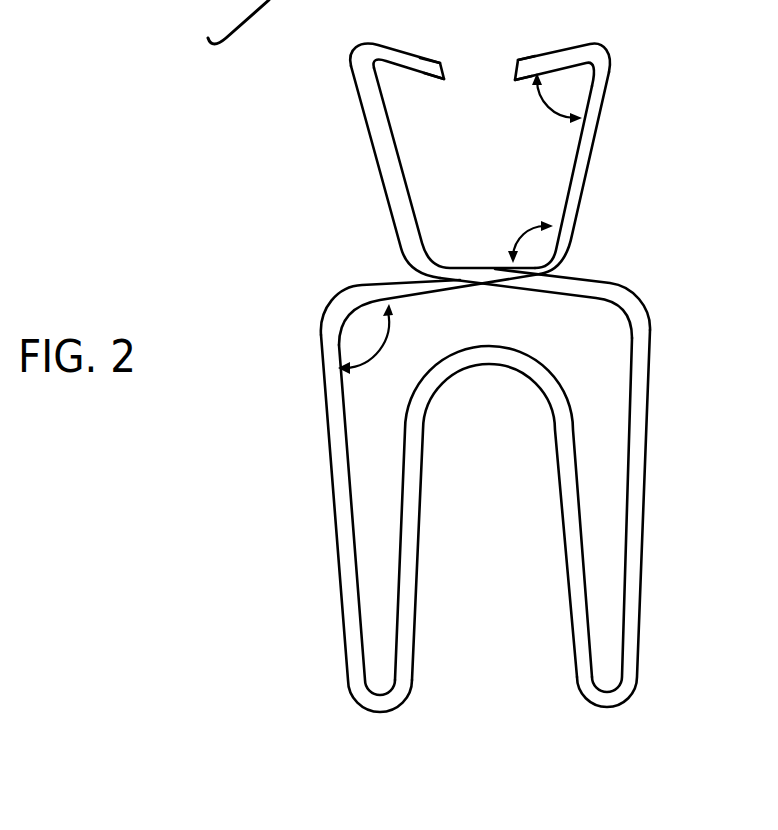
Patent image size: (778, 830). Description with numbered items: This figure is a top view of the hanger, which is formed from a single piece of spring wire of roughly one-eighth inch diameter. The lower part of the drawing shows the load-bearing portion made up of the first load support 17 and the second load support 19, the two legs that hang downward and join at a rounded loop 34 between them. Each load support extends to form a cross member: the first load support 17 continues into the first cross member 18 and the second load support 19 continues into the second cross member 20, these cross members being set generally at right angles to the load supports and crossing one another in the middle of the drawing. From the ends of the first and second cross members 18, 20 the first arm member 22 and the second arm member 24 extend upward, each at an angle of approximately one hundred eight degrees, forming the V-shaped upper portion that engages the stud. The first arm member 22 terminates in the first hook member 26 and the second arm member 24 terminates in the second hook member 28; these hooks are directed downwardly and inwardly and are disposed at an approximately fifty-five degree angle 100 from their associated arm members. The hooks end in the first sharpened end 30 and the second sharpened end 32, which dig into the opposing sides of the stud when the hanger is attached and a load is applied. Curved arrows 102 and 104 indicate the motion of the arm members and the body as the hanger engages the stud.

The first load support 17 is at (334, 422).
The first cross member 18 is at (388, 290).
The second load support 19 is at (638, 449).
The second cross member 20 is at (583, 292).
The first arm member 22 is at (584, 158).
The second arm member 24 is at (372, 120).
The first hook member 26 is at (561, 49).
The second hook member 28 is at (390, 50).
The first sharpened end 30 is at (515, 69).
The second sharpened end 32 is at (441, 70).
The central inverted U-shaped portion 34 is at (483, 352).
The angle 100 is at (540, 100).
The direction of arm movement 102 is at (510, 237).
The direction of body movement 104 is at (388, 348).